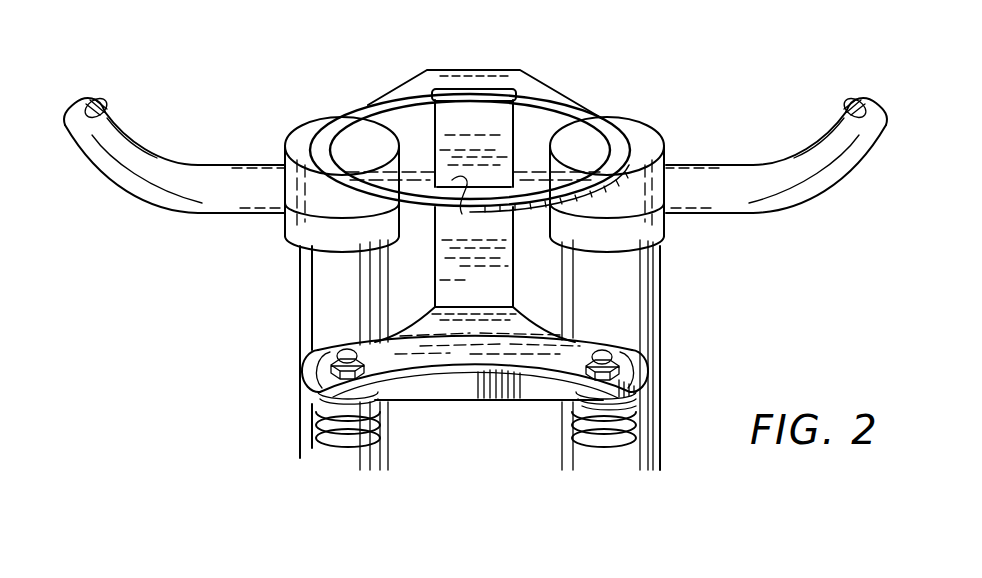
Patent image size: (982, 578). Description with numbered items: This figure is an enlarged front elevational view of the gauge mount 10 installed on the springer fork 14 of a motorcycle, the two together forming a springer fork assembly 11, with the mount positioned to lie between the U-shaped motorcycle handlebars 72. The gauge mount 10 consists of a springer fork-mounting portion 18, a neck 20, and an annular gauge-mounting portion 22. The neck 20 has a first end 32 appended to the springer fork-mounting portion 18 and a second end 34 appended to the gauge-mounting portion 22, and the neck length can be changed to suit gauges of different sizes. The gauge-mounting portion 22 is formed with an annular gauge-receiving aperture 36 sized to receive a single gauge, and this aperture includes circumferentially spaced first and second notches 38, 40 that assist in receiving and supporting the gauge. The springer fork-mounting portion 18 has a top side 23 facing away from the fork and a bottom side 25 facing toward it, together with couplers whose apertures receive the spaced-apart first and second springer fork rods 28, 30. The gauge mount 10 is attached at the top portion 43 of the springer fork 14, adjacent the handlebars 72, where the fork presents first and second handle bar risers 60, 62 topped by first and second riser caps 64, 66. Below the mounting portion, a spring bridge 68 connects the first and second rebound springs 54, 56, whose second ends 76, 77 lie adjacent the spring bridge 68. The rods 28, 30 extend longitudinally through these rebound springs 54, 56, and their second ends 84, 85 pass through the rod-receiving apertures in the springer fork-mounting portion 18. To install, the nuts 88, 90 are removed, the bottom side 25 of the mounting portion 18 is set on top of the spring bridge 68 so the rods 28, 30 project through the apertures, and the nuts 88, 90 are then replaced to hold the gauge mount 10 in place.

The gauge mount 10 is at (613, 92).
The springer fork assembly 11 is at (744, 327).
The springer fork 14 is at (312, 456).
The springer fork-mounting portion 18 is at (628, 369).
The neck 20 is at (445, 243).
The annular gauge-mounting portion 22 is at (543, 91).
The top side 23 is at (548, 368).
The bottom side 25 is at (414, 382).
The first springer fork rod 28 is at (330, 359).
The second springer fork rod 30 is at (620, 352).
The first end 32 is at (510, 306).
The second end 34 is at (505, 72).
The gauge-receiving aperture 36 is at (412, 134).
The first notch 38 is at (460, 96).
The second notch 40 is at (462, 214).
The top portion 43 is at (256, 379).
The first rebound spring 54 is at (352, 443).
The second rebound spring 56 is at (610, 446).
The first handle bar riser 60 is at (318, 281).
The second handle bar riser 62 is at (643, 283).
The first riser cap 64 is at (300, 148).
The second riser cap 66 is at (650, 141).
The spring bridge 68 is at (483, 402).
The U-shaped motorcycle handlebars 72 is at (143, 157).
The second end of first rebound spring 76 is at (330, 405).
The second end of second rebound spring 77 is at (612, 416).
The second end of first springer fork rod 84 is at (346, 352).
The second end of second springer fork rod 85 is at (603, 354).
The nut 88 is at (366, 369).
The nut 90 is at (589, 373).